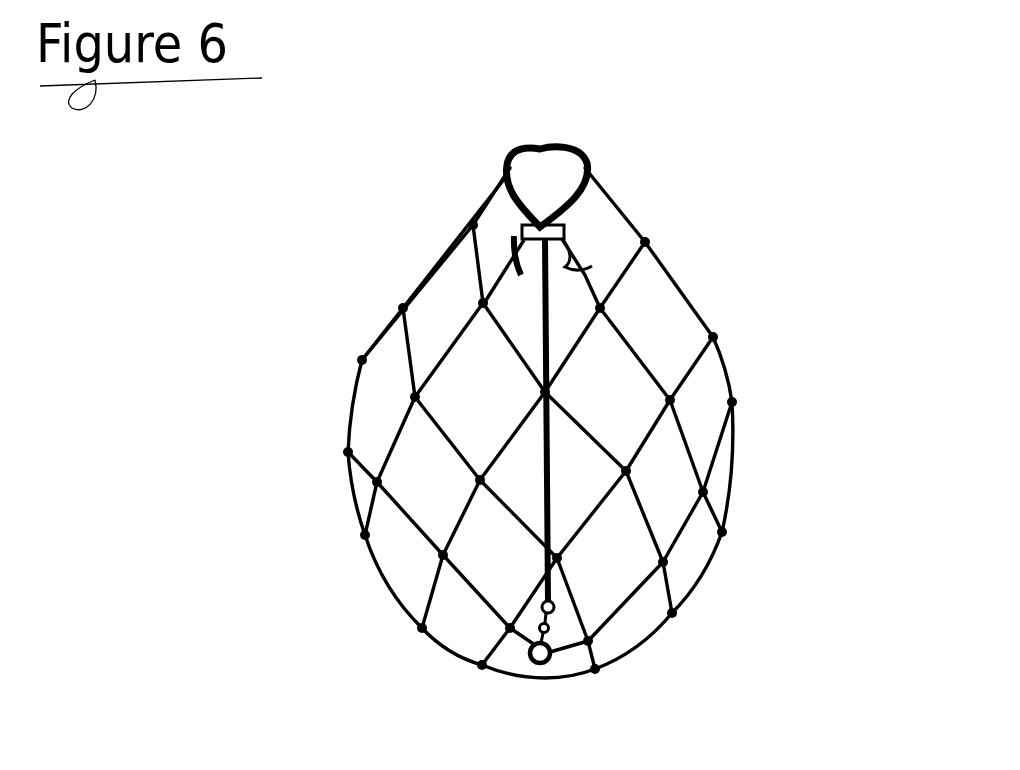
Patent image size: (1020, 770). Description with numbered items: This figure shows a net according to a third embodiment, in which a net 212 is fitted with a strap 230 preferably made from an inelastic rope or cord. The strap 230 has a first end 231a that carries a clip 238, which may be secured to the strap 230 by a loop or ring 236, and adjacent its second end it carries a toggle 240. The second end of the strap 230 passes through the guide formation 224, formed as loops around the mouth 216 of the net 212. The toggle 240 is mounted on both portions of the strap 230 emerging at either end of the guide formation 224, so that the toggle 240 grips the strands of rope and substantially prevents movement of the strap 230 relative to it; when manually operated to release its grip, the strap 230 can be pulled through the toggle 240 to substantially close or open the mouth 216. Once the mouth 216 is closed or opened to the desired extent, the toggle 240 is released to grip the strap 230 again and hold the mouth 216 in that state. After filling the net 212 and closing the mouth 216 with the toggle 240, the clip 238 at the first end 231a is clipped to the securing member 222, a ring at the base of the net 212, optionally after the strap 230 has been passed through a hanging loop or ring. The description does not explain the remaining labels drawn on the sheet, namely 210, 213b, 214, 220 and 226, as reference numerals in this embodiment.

The retrieval device 210 is at (778, 207).
The net 212 is at (458, 192).
The wire 213b is at (520, 270).
The distal portion 214 is at (405, 650).
The mouth 216 is at (541, 180).
The basket wires 220 is at (738, 362).
The securing member 222 is at (552, 655).
The guide formation 224 is at (570, 147).
The junction 226 is at (717, 333).
The strap 230 is at (585, 228).
The first end 231a is at (553, 600).
The loop or ring 236 is at (558, 622).
The clip 238 is at (557, 645).
The toggle 240 is at (600, 267).